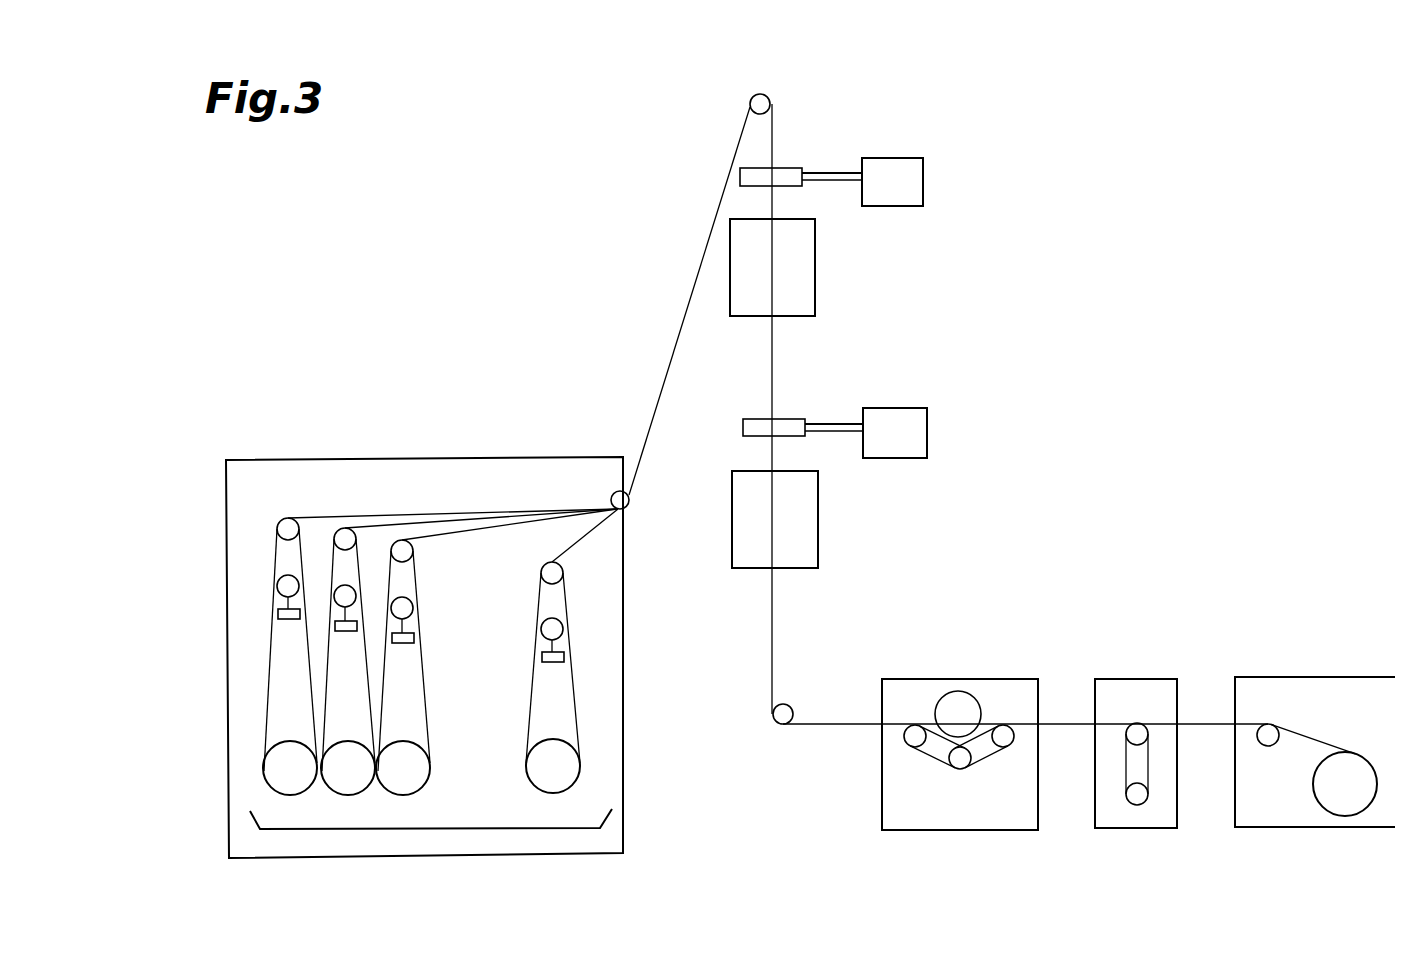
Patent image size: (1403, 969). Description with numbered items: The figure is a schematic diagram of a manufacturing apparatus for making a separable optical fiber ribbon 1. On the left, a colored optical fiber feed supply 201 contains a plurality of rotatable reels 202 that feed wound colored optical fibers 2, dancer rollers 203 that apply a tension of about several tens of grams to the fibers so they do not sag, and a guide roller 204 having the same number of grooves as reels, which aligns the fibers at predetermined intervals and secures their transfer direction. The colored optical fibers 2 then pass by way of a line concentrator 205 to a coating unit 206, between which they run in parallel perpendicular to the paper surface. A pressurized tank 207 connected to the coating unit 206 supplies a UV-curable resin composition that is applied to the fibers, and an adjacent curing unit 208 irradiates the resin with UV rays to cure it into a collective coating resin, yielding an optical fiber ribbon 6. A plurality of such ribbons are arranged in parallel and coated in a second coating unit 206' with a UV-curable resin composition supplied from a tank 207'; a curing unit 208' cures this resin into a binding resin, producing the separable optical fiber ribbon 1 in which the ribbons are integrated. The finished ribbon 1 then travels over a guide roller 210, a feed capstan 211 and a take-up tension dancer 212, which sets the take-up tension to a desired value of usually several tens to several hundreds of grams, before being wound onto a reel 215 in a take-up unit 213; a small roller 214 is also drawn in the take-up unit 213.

The separable optical fiber ribbon 1 is at (773, 652).
The colored optical fibers 2 is at (265, 680).
The optical fiber ribbon 6 is at (773, 343).
The colored optical fiber feed supply 201 is at (383, 457).
The rotatable reels 202 is at (263, 786).
The dancer rollers 203 is at (563, 570).
The guide roller 204 is at (613, 492).
The line concentrator 205 is at (750, 103).
The coating unit 206 is at (809, 139).
The pressurized tank 207 is at (951, 182).
The curing unit 208 is at (830, 267).
The coating unit 206' is at (809, 397).
The tank 207' is at (955, 433).
The curing unit 208' is at (836, 519).
The guide roller 210 is at (793, 703).
The feed capstan 211 is at (968, 678).
The take-up tension dancer 212 is at (1133, 678).
The take-up unit 213 is at (1295, 676).
The guide roller 214 is at (1262, 745).
The reel 215 is at (1322, 812).